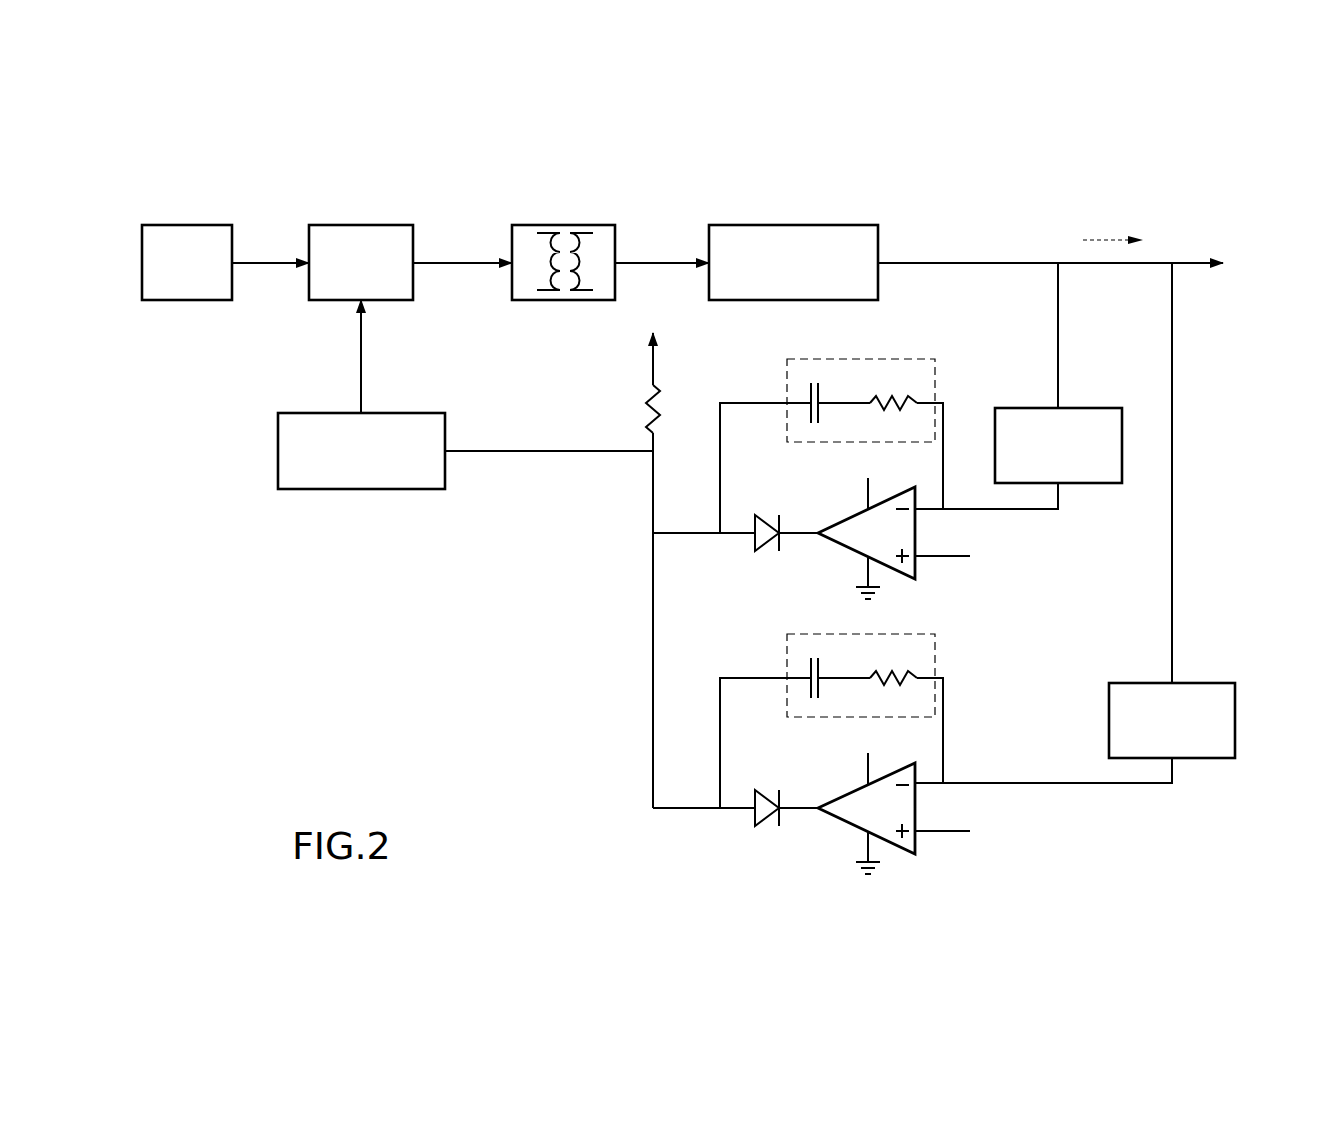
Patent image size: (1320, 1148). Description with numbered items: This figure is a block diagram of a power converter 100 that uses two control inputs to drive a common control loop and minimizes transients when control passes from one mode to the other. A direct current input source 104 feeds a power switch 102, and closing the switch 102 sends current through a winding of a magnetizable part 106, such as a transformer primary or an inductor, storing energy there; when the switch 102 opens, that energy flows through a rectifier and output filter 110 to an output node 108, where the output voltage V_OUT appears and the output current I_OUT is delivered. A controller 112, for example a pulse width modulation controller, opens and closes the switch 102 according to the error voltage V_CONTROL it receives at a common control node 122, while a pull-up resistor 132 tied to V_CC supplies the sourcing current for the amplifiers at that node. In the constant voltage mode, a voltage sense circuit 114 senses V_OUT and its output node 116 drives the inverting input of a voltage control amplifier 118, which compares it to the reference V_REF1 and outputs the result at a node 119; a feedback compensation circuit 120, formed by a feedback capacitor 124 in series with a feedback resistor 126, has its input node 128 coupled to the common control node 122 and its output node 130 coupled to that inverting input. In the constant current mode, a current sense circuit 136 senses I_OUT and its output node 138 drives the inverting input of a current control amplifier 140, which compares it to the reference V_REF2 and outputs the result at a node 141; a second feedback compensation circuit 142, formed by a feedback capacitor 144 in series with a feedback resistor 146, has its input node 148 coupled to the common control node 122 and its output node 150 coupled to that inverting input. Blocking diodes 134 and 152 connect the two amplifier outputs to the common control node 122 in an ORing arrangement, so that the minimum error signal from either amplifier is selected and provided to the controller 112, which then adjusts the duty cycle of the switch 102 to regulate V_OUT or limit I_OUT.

The power converter 100 is at (1120, 133).
The power switch 102 is at (359, 225).
The direct current input source 104 is at (184, 225).
The magnetizable part 106 is at (565, 225).
The output node 108 is at (1180, 262).
The rectifier and output filter 110 is at (806, 225).
The controller 112 is at (402, 413).
The voltage sense circuit 114 is at (1197, 683).
The output node of voltage sense circuit 116 is at (1113, 785).
The voltage control amplifier 118 is at (848, 828).
The node 119 is at (800, 805).
The feedback compensation circuit 120 is at (877, 657).
The common control node 122 is at (652, 478).
The feedback capacitor 124 is at (806, 668).
The feedback resistor 126 is at (910, 673).
The input node of feedback compensation circuit 128 is at (756, 676).
The output node of feedback compensation circuit 130 is at (945, 736).
The pull-up resistor 132 is at (650, 401).
The blocking diode 134 is at (762, 825).
The current sense circuit 136 is at (1078, 408).
The output node of current sense circuit 138 is at (1040, 512).
The current control amplifier 140 is at (848, 552).
The node 141 is at (801, 530).
The feedback compensation circuit 142 is at (889, 379).
The feedback capacitor 144 is at (819, 384).
The feedback resistor 146 is at (918, 398).
The input node of feedback compensation circuit 148 is at (758, 403).
The output node of feedback compensation circuit 150 is at (968, 438).
The blocking diode 152 is at (760, 548).